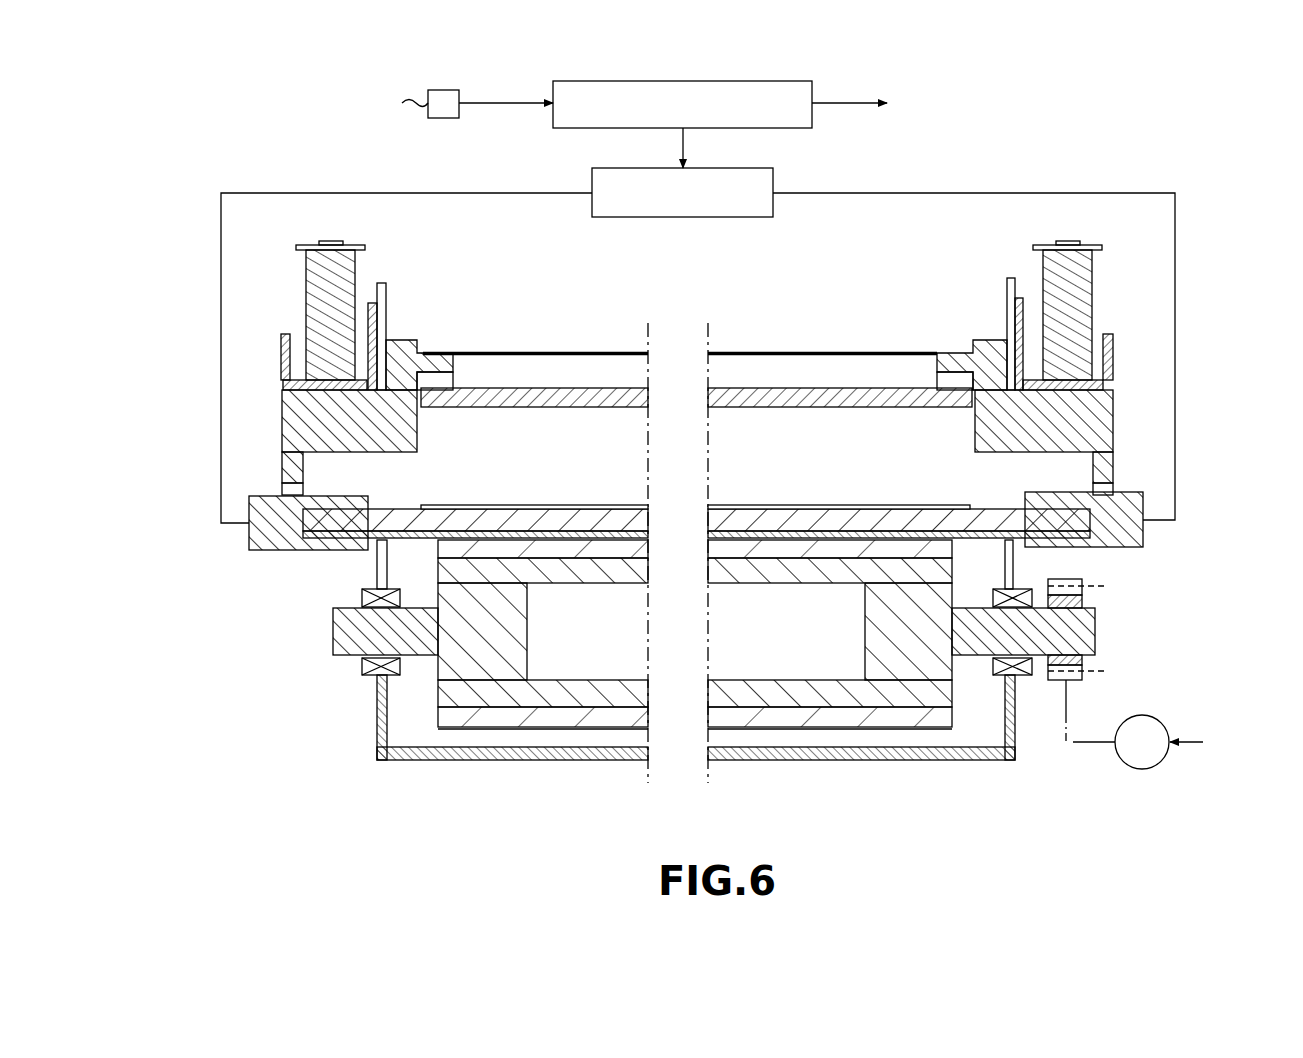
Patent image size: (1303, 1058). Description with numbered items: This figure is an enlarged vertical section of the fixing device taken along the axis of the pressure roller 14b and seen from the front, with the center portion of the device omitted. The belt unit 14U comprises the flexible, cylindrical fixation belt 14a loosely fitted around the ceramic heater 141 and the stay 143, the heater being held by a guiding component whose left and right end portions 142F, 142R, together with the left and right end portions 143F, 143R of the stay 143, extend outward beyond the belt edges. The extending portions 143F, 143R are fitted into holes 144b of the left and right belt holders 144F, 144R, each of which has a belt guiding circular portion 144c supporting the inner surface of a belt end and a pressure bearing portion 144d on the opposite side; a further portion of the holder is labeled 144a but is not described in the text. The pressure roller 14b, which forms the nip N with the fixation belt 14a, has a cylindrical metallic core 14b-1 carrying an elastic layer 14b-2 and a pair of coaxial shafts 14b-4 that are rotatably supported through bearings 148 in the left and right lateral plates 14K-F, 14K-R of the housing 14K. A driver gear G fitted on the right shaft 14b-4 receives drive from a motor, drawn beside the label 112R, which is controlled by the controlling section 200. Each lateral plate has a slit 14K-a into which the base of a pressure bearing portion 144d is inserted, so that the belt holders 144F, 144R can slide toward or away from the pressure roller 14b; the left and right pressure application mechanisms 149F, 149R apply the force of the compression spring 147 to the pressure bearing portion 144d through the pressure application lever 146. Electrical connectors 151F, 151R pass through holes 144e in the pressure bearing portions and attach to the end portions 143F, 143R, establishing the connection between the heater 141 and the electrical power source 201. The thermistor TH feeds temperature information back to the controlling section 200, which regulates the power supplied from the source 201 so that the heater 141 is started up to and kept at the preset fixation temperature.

The controlling section 200 is at (783, 81).
The electrical power source 201 is at (773, 168).
The thermistor TH is at (411, 104).
The compression spring 147 is at (345, 280).
The left pressure application mechanism 149F is at (289, 298).
The right pressure application mechanism 149R is at (1108, 296).
The slit 14K-a is at (383, 313).
The pressure application lever 146 is at (281, 356).
The pressure bearing portion 144d is at (297, 407).
The left belt holder 144F is at (276, 418).
The right belt holder 144R is at (1120, 418).
The left end portion of stay 143F is at (303, 470).
The right end portion of stay 143R is at (1093, 470).
The hole 144e is at (290, 490).
The flange portion 144a is at (405, 337).
The belt guiding circular portion 144c is at (453, 373).
The hole 144b is at (367, 467).
The fixation belt 14a is at (597, 352).
The belt unit 14U is at (743, 346).
The stay 143 is at (492, 403).
The ceramic heater 141 is at (585, 530).
The left electrical connector 151F is at (275, 545).
The right electrical connector 151R is at (1130, 545).
The left end portion of guide 142F is at (350, 544).
The right end portion of guide 142R is at (1060, 541).
The cylindrical metallic core 14b-1 is at (561, 574).
The elastic layer 14b-2 is at (610, 556).
The pressure roller 14b is at (565, 737).
The nip N is at (786, 638).
The shafts 14b-4 is at (338, 633).
The bearings 148 is at (365, 672).
The left lateral plate 14K-F is at (373, 720).
The right lateral plate 14K-R is at (1012, 720).
The frame 14K is at (780, 756).
The driver gear G is at (1085, 656).
The drive motor 112R is at (1170, 724).